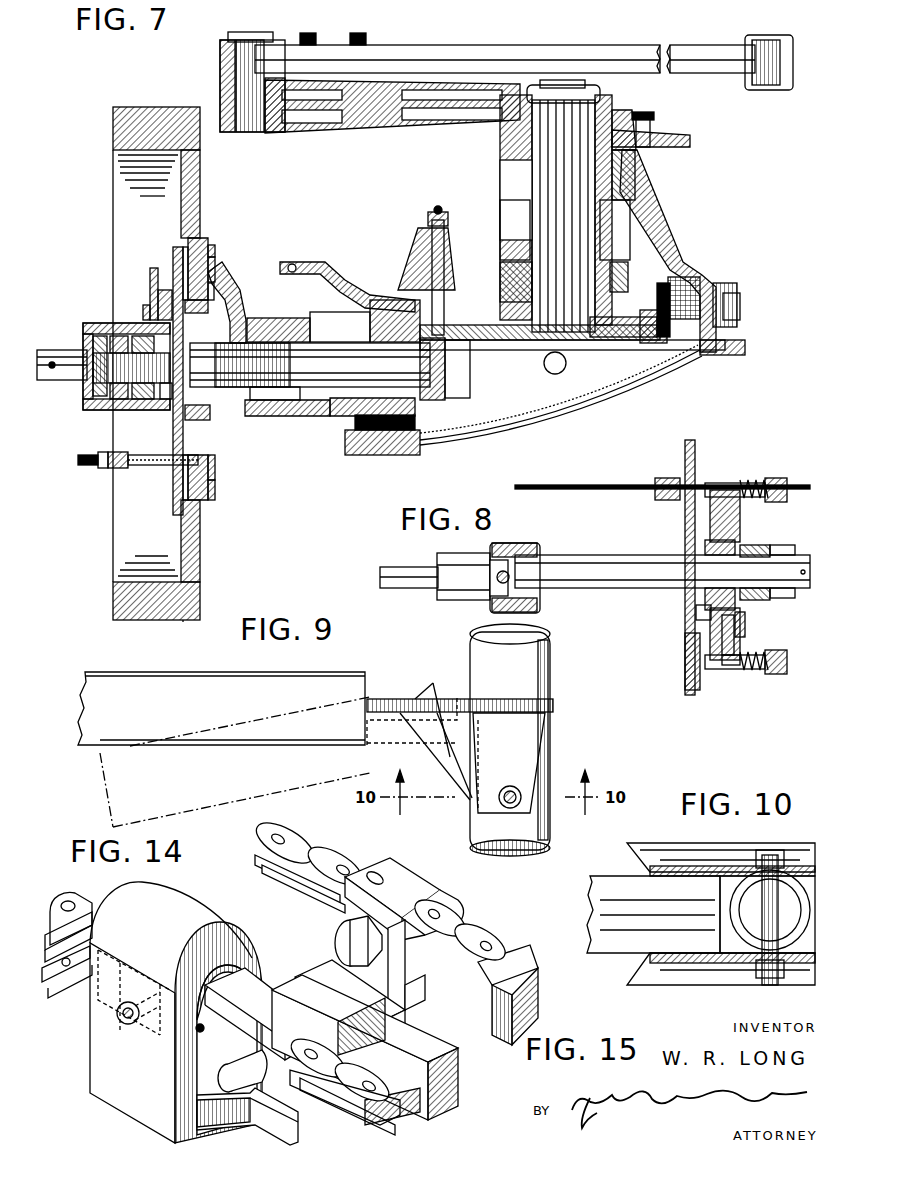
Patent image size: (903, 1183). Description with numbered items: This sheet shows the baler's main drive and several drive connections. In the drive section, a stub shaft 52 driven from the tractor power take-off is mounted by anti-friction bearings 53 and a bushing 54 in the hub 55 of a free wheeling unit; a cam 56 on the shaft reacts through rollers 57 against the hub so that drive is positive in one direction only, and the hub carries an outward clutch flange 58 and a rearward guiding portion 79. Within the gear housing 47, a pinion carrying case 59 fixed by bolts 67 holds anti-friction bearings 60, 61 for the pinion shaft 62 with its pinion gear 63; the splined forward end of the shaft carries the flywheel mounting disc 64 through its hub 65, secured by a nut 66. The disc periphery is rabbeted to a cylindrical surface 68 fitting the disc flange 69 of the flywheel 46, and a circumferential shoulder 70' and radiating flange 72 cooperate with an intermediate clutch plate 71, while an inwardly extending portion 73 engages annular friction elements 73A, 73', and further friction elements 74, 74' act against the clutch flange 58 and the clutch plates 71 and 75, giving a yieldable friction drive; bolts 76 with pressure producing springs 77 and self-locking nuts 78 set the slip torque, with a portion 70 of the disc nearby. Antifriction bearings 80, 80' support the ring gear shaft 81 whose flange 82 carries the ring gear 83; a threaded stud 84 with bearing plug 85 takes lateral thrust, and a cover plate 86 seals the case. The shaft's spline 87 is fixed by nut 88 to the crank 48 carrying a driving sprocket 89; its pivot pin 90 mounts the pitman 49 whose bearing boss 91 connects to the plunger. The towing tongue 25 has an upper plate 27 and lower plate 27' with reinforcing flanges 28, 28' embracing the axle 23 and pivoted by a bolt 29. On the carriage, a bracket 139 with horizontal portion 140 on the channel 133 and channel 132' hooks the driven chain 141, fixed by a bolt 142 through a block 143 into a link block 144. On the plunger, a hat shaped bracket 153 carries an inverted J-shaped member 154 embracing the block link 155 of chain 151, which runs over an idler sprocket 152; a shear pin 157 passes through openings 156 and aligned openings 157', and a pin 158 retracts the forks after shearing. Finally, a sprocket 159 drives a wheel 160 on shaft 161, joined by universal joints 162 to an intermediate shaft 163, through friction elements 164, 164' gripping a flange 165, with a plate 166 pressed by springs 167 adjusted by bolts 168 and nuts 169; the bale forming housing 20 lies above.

In FIG. 8, the bale forming housing 20 is at (697, 448).
In FIG. 9, the axle 23 is at (535, 820).
In FIG. 10, the axle 23 is at (805, 922).
In FIG. 9, the towing tongue 25 is at (146, 670).
In FIG. 10, the towing tongue 25 is at (590, 905).
In FIG. 9, the upper plate 27 is at (474, 741).
In FIG. 10, the upper plate 27 is at (705, 863).
In FIG. 10, the lower plate 27' is at (710, 963).
In FIG. 10, the reinforcing flange 28 is at (717, 843).
In FIG. 10, the reinforcing flange 28' is at (721, 980).
In FIG. 10, the bolt 29 is at (778, 905).
In FIG. 7, the flywheel 46 is at (182, 615).
In FIG. 7, the gear housing 47 is at (675, 252).
In FIG. 7, the crank 48 is at (358, 132).
In FIG. 7, the pitman 49 is at (508, 48).
In FIG. 7, the stub shaft 52 is at (58, 382).
In FIG. 7, the anti-friction bearings 53 is at (83, 345).
In FIG. 7, the bushing 54 is at (131, 368).
In FIG. 7, the hub 55 is at (95, 400).
In FIG. 7, the cam 56 is at (142, 402).
In FIG. 7, the rollers 57 is at (118, 402).
In FIG. 7, the clutch flange 58 is at (145, 310).
In FIG. 7, the pinion carrying case 59 is at (268, 416).
In FIG. 7, the anti-friction bearing 60 is at (290, 416).
In FIG. 7, the anti-friction bearing 61 is at (425, 395).
In FIG. 7, the pinion shaft 62 is at (345, 338).
In FIG. 7, the pinion gear 63 is at (455, 385).
In FIG. 7, the flywheel mounting disc 64 is at (262, 309).
In FIG. 7, the hub 65 is at (268, 366).
In FIG. 7, the nut 66 is at (197, 419).
In FIG. 7, the bolts 67 is at (372, 455).
In FIG. 7, the cylindrical surface 68 is at (216, 474).
In FIG. 7, the disc flange 69 is at (195, 175).
In FIG. 7, the hub 70 is at (176, 252).
In FIG. 7, the circumferential shoulder 70' is at (217, 484).
In FIG. 7, the intermediate clutch plate 71 is at (175, 262).
In FIG. 7, the radiating flange 72 is at (215, 262).
In FIG. 7, the inwardly extending portion 73 is at (157, 380).
In FIG. 7, the friction element 73A is at (214, 249).
In FIG. 7, the annular friction element 73' is at (229, 285).
In FIG. 7, the friction element 74 is at (146, 301).
In FIG. 7, the friction element 74' is at (196, 314).
In FIG. 7, the clutch plate 75 is at (150, 275).
In FIG. 7, the bolts 76 is at (170, 462).
In FIG. 7, the pressure producing springs 77 is at (133, 465).
In FIG. 7, the self-locking nuts 78 is at (110, 462).
In FIG. 7, the guiding portion 79 is at (185, 400).
In FIG. 7, the antifriction bearing 80 is at (578, 276).
In FIG. 7, the antifriction bearing 80' is at (642, 175).
In FIG. 7, the ring gear shaft 81 is at (582, 222).
In FIG. 7, the flange 82 is at (498, 345).
In FIG. 7, the ring gear 83 is at (690, 362).
In FIG. 7, the threaded stud 84 is at (420, 240).
In FIG. 7, the bearing plug 85 is at (448, 260).
In FIG. 7, the cover plate 86 is at (610, 405).
In FIG. 7, the spline 87 is at (563, 216).
In FIG. 7, the nut 88 is at (592, 92).
In FIG. 7, the driving sprocket 89 is at (672, 138).
In FIG. 7, the pivot pin 90 is at (252, 132).
In FIG. 7, the bearing boss 91 is at (793, 85).
In FIG. 15, the block 132' is at (487, 969).
In FIG. 15, the channel 133 is at (452, 1090).
In FIG. 15, the bracket 139 is at (330, 964).
In FIG. 15, the horizontal portion 140 is at (420, 972).
In FIG. 15, the driven chain 141 is at (348, 856).
In FIG. 15, the bolt 142 is at (338, 932).
In FIG. 15, the block 143 is at (412, 998).
In FIG. 15, the block 144 is at (430, 885).
In FIG. 14, the chain 151 is at (74, 893).
In FIG. 15, the idler sprocket 152 is at (408, 1108).
In FIG. 14, the hat shaped bracket 153 is at (236, 1116).
In FIG. 14, the inverted J-shaped member 154 is at (195, 906).
In FIG. 14, the block link 155 is at (272, 1012).
In FIG. 14, the openings 156 is at (204, 1031).
In FIG. 14, the shear pin 157 is at (146, 1028).
In FIG. 14, the aligned openings 157' is at (117, 1033).
In FIG. 14, the pin 158 is at (262, 1072).
In FIG. 8, the sprocket 159 is at (712, 672).
In FIG. 8, the wheel 160 is at (735, 611).
In FIG. 8, the shaft 161 is at (628, 590).
In FIG. 8, the universal joints 162 is at (475, 600).
In FIG. 8, the intermediate shaft 163 is at (402, 590).
In FIG. 8, the friction element 164 is at (677, 627).
In FIG. 8, the friction element 164' is at (755, 635).
In FIG. 8, the flange 165 is at (742, 632).
In FIG. 8, the plate 166 is at (738, 672).
In FIG. 8, the springs 167 is at (750, 480).
In FIG. 8, the bolts 168 is at (722, 490).
In FIG. 8, the nuts 169 is at (776, 500).